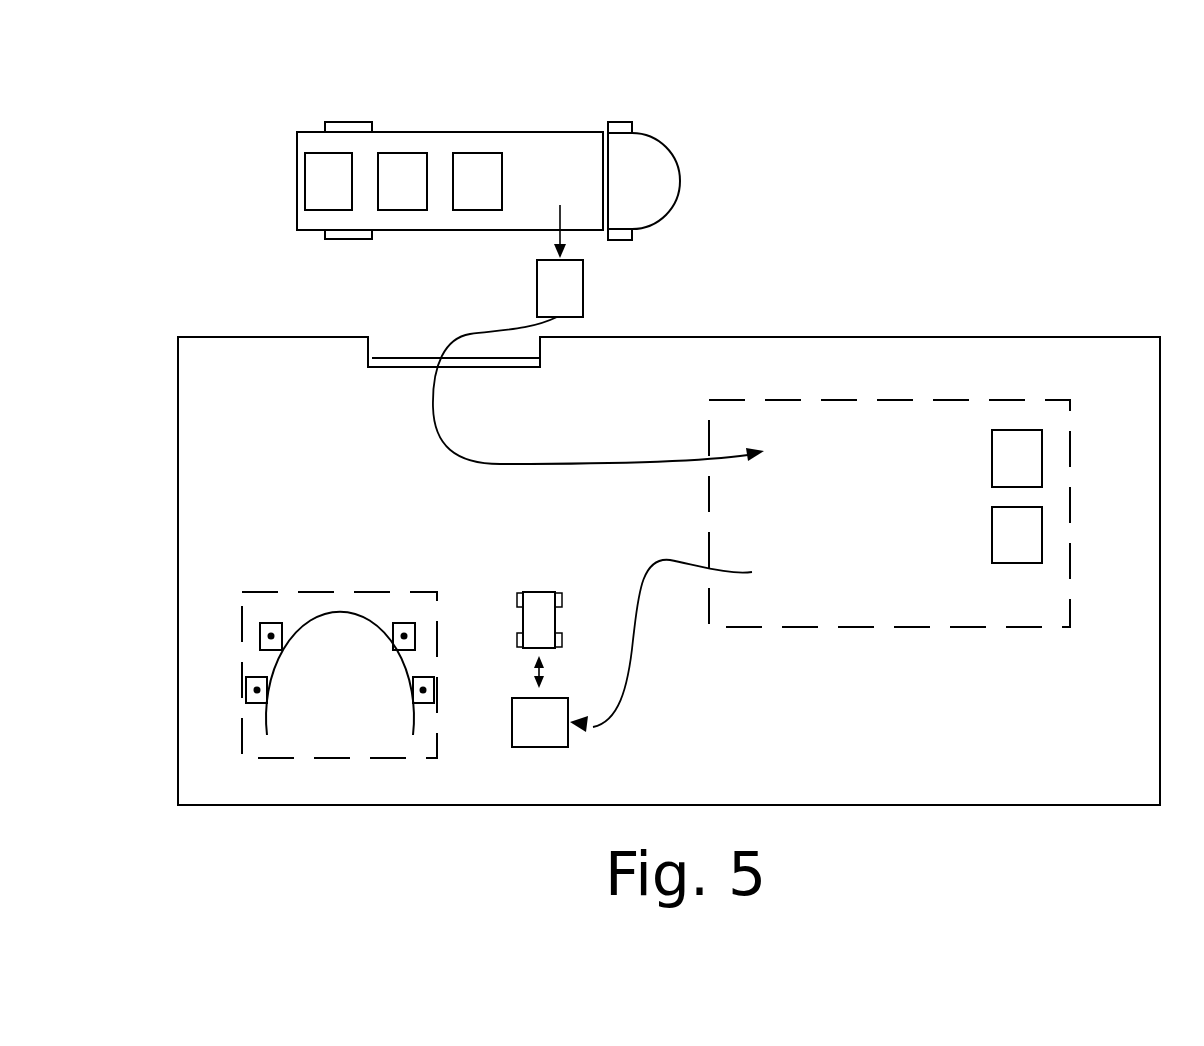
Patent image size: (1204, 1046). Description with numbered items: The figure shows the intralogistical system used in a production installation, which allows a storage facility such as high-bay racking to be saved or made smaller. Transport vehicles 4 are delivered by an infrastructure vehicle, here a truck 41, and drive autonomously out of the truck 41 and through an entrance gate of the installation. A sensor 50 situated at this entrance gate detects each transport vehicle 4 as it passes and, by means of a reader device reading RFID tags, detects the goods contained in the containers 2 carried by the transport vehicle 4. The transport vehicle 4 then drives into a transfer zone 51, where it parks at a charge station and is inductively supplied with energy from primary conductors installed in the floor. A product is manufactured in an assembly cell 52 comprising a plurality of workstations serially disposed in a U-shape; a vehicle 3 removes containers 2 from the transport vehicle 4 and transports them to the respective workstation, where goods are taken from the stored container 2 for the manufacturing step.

The container 2 is at (271, 636).
The vehicle 3 is at (548, 642).
The transport vehicle 4 is at (341, 203).
The truck 41 is at (527, 153).
The sensor 50 is at (388, 362).
The transfer zone 51 is at (950, 402).
The assembly cell 52 is at (350, 590).